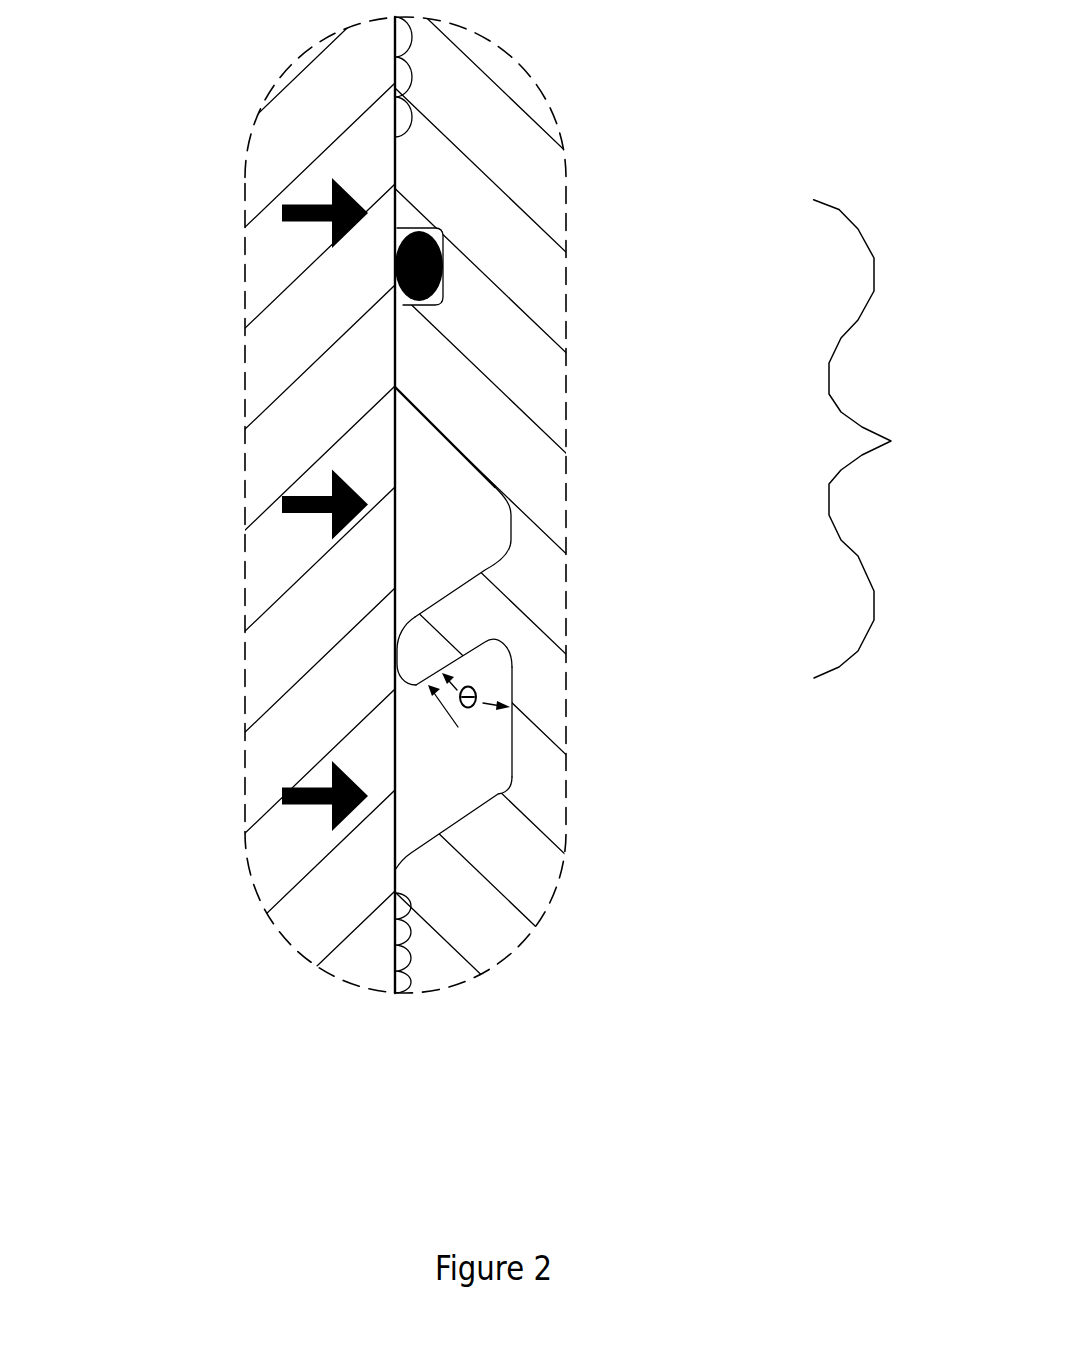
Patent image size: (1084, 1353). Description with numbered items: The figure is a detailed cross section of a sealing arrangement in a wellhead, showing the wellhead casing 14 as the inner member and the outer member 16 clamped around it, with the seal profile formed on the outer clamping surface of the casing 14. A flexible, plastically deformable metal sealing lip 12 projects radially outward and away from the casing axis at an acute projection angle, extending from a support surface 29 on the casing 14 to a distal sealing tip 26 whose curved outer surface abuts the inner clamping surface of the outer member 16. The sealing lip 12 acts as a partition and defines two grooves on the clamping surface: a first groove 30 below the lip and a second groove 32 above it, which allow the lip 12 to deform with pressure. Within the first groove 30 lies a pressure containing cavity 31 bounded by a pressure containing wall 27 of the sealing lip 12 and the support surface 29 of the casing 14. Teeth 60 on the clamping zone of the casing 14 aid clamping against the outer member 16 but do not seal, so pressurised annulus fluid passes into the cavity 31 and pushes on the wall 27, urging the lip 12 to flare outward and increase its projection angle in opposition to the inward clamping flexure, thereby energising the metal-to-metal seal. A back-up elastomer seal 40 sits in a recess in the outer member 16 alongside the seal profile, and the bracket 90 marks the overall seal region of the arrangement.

The sealing lip 12 is at (437, 601).
The wellhead casing 14 is at (492, 132).
The outer member 16 is at (320, 132).
The sealing tip 26 is at (396, 660).
The pressure containing wall 27 is at (458, 726).
The support surface 29 is at (512, 725).
The first groove 30 is at (443, 767).
The pressure containing cavity 31 is at (482, 667).
The second groove 32 is at (455, 505).
The back-up elastomer seal 40 is at (446, 267).
The teeth 60 is at (395, 942).
The seal region 90 is at (891, 441).